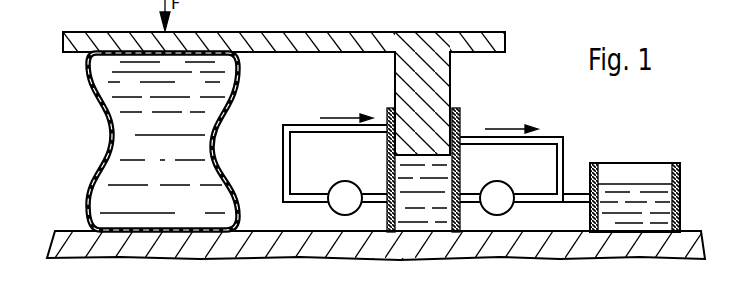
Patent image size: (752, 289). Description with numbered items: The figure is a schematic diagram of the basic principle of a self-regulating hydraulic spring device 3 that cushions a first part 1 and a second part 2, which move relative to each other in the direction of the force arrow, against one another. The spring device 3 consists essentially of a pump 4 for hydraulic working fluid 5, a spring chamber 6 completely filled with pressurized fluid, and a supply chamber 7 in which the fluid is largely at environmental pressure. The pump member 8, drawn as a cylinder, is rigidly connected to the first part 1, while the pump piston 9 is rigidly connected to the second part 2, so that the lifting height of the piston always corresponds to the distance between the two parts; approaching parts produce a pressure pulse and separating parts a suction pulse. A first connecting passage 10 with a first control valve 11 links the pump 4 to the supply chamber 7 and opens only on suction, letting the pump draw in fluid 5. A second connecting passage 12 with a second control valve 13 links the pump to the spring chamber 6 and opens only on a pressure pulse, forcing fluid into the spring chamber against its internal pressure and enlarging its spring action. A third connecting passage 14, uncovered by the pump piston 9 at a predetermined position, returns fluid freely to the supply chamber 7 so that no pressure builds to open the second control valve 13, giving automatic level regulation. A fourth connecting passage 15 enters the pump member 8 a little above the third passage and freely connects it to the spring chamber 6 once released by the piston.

The first part 1 is at (686, 242).
The second part 2 is at (302, 31).
The spring device 3 is at (288, 103).
The pump 4 is at (472, 80).
The hydraulic working fluid 5 is at (202, 208).
The spring chamber 6 is at (113, 101).
The supply chamber 7 is at (638, 172).
The pump member 8 is at (461, 169).
The pump piston 9 is at (404, 93).
The first connecting passage 10 is at (533, 203).
The first control valve 11 is at (513, 192).
The second connecting passage 12 is at (377, 194).
The second control valve 13 is at (334, 186).
The third connecting passage 14 is at (560, 136).
The fourth connecting passage 15 is at (283, 150).